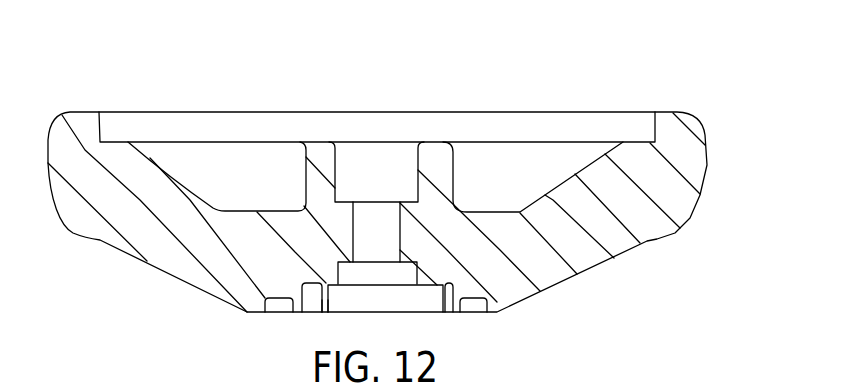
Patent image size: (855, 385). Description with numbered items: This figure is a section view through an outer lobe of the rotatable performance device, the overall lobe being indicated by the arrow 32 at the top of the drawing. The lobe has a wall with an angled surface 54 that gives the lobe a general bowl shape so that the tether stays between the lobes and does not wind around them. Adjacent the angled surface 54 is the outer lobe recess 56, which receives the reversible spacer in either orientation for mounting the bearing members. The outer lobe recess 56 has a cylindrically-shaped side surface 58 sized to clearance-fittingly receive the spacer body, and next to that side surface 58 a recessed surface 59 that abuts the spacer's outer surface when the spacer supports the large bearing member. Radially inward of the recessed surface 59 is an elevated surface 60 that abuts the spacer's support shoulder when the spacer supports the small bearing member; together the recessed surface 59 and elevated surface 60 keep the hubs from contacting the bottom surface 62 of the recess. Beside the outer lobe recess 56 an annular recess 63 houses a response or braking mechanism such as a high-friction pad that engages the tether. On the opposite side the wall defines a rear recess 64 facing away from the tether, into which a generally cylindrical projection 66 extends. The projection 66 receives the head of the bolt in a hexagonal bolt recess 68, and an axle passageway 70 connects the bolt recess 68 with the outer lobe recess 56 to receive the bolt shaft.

The hub assembly 32 is at (615, 70).
The angled surface 54 is at (150, 263).
The outer lobe recess 56 is at (374, 288).
The cylindrically-shaped side surface 58 is at (306, 303).
The recessed surface 59 is at (445, 290).
The elevated surface 60 is at (328, 296).
The bottom surface 62 is at (343, 258).
The annular recess 63 is at (477, 307).
The rear recess 64 is at (226, 176).
The cylindrical projection 66 is at (454, 170).
The bolt recess 68 is at (336, 153).
The axle passageway 70 is at (375, 236).